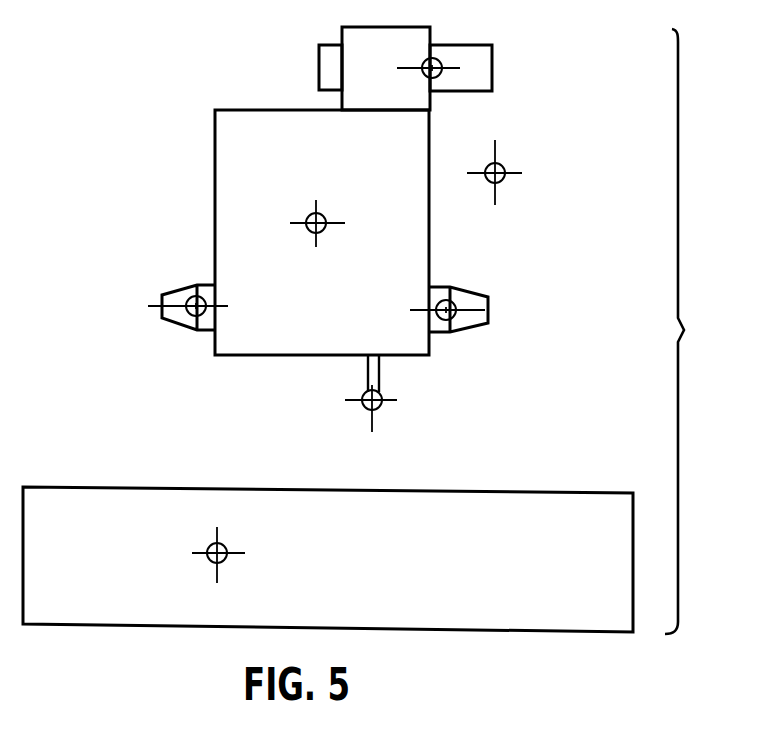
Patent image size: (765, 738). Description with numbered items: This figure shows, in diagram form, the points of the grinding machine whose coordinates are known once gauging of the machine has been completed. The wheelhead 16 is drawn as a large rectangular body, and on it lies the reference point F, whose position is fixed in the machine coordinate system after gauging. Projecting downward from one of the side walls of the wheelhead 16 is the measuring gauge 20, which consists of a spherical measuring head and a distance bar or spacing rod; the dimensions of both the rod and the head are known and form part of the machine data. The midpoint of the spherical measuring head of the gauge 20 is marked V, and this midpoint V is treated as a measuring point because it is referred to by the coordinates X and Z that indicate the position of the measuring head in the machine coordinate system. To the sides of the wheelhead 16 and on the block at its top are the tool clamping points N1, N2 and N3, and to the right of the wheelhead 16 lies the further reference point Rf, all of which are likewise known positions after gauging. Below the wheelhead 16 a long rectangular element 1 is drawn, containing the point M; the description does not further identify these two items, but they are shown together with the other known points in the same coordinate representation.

The base plate 1 is at (562, 573).
The wheelhead 16 is at (216, 182).
The measuring gauge 20 is at (380, 368).
The tool clamping point N1 is at (188, 289).
The tool clamping point N2 is at (449, 293).
The tool clamping point N3 is at (434, 41).
The reference point F is at (317, 220).
The reference point Rf is at (502, 172).
The measuring point V is at (369, 400).
The measuring point M is at (220, 560).